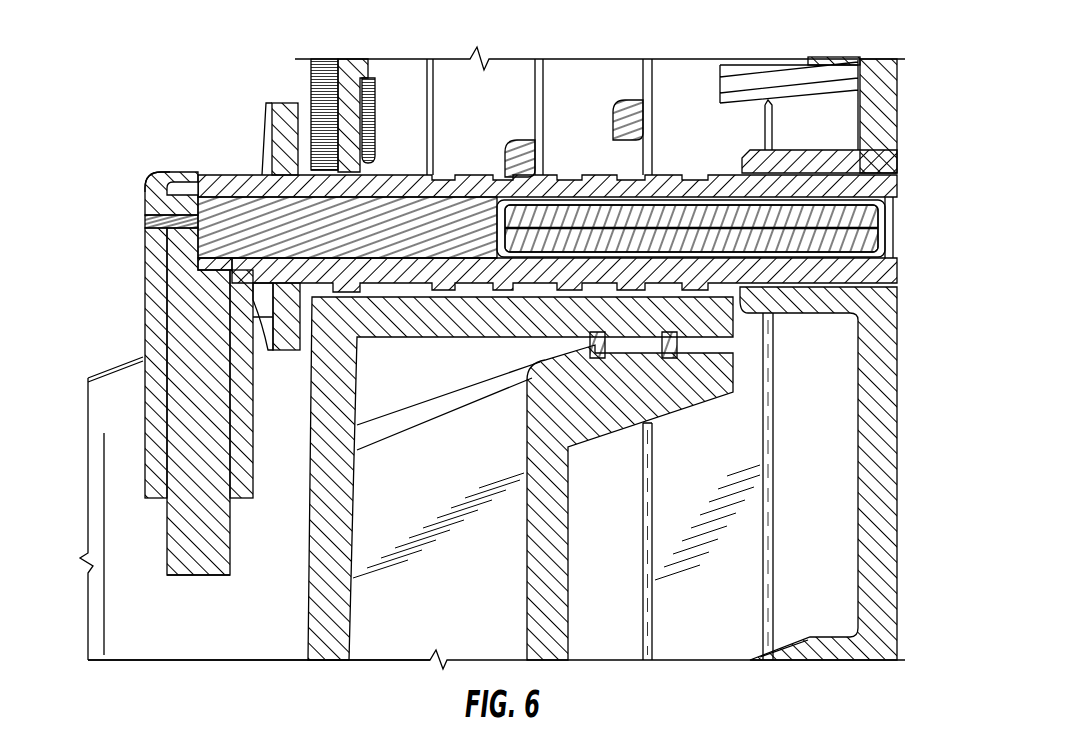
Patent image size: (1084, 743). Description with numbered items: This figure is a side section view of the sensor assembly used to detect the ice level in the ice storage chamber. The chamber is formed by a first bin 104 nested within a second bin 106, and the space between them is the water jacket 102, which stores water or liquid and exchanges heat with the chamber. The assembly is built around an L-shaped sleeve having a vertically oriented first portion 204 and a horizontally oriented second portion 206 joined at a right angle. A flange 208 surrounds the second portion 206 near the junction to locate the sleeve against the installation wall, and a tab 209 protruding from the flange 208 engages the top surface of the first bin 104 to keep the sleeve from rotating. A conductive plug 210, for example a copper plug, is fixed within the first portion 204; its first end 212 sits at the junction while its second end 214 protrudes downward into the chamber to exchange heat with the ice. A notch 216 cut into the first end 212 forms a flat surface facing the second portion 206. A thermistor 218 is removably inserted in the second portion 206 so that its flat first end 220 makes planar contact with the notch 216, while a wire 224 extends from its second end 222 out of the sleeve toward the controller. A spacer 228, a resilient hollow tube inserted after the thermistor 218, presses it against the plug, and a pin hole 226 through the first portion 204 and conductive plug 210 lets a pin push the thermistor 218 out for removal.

The water jacket 102 is at (430, 622).
The first bin 104 is at (328, 505).
The second bin 106 is at (553, 543).
The first portion 204 is at (152, 348).
The second portion 206 is at (415, 180).
The flange 208 is at (288, 112).
The tab 209 is at (313, 300).
The conductive plug 210 is at (183, 528).
The first end 212 is at (146, 190).
The second end 214 is at (161, 587).
The notch 216 is at (203, 239).
The thermistor 218 is at (462, 240).
The first end 220 is at (177, 171).
The second end 222 is at (530, 176).
The wire 224 is at (922, 87).
The pin hole 226 is at (143, 222).
The spacer 228 is at (789, 248).